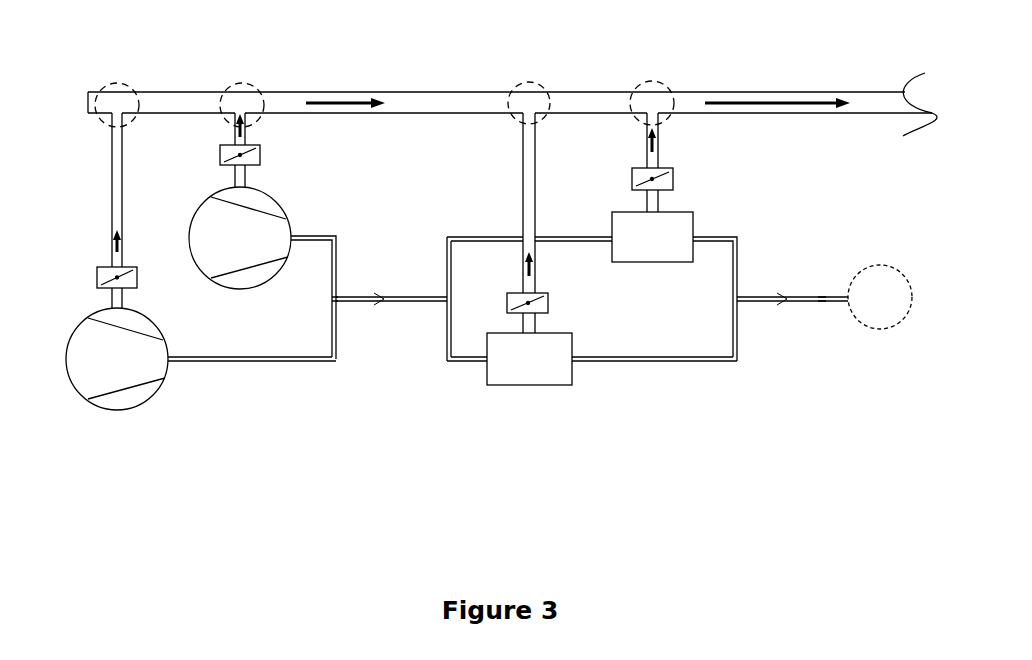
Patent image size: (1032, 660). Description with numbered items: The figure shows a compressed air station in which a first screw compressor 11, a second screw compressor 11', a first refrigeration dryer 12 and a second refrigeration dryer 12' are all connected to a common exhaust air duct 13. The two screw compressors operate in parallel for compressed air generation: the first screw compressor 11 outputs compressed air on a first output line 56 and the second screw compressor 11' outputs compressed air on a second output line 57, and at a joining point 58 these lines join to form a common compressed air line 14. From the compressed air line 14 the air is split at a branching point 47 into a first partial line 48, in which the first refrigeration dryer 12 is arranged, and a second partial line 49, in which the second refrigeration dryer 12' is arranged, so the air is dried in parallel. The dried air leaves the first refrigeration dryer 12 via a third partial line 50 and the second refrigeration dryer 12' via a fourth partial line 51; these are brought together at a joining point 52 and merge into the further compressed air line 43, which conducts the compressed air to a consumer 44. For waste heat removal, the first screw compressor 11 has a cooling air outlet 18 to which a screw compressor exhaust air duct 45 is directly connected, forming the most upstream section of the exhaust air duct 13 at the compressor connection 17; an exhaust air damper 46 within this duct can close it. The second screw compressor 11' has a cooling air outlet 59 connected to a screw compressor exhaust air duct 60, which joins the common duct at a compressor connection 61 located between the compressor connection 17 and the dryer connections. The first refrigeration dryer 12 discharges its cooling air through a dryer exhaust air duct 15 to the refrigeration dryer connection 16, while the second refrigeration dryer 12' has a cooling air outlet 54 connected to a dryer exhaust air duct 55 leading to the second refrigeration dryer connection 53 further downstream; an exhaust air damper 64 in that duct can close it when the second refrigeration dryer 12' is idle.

The first screw compressor 11 is at (117, 396).
The second screw compressor 11' is at (241, 260).
The first refrigeration dryer 12 is at (529, 390).
The second refrigeration dryer 12' is at (686, 220).
The common exhaust air duct 13 is at (178, 97).
The compressed air line 14 is at (345, 296).
The dryer exhaust air duct 15 is at (520, 158).
The refrigeration dryer connection 16 is at (516, 84).
The compressor connection 17 is at (112, 88).
The cooling air outlet 18 is at (134, 305).
The further compressed air line 43 is at (820, 302).
The consumer 44 is at (882, 278).
The screw compressor exhaust air duct 45 is at (110, 150).
The exhaust air damper 46 is at (95, 273).
The branching point 47 is at (446, 305).
The first partial line 48 is at (460, 361).
The second partial line 49 is at (470, 236).
The third partial line 50 is at (660, 361).
The fourth partial line 51 is at (740, 240).
The joining point 52 is at (738, 302).
The second refrigeration dryer connection 53 is at (650, 84).
The cooling air outlet 54 is at (636, 205).
The dryer exhaust air duct 55 is at (645, 128).
The first output line 56 is at (250, 361).
The second output line 57 is at (318, 238).
The joining point 58 is at (335, 302).
The cooling air outlet 59 is at (258, 182).
The screw compressor exhaust air duct 60 is at (234, 127).
The compressor connection 61 is at (238, 90).
The exhaust air damper 64 is at (672, 172).